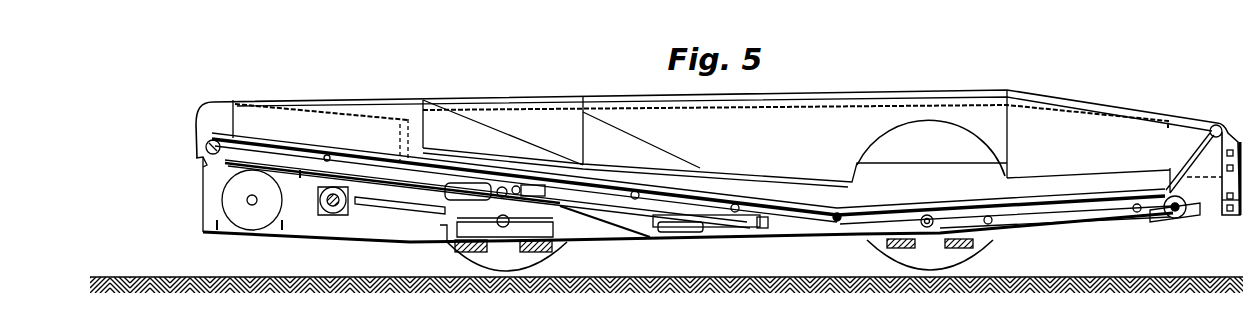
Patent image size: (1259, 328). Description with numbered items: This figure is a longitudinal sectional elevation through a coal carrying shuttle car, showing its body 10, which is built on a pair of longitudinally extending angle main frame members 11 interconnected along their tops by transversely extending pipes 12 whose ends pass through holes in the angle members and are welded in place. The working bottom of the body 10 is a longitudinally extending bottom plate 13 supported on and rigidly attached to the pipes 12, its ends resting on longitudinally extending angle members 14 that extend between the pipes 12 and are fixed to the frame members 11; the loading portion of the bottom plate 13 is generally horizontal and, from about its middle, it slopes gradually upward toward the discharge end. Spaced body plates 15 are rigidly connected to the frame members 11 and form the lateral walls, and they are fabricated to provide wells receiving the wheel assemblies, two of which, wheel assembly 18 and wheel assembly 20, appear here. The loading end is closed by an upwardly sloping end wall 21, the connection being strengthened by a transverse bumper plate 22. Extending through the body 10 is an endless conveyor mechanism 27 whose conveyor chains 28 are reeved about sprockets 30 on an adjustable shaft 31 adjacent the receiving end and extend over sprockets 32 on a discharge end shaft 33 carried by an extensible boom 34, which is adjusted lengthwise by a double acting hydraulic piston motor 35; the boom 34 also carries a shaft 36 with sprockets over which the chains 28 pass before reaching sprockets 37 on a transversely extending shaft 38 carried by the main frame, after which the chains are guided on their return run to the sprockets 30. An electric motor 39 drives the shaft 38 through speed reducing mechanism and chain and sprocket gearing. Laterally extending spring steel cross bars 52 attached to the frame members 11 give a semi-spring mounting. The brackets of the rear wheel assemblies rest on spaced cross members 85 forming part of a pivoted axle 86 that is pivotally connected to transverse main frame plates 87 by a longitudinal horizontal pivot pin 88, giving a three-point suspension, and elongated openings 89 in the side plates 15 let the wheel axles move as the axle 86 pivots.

The body 10 is at (870, 85).
The angle main frame members 11 is at (1042, 220).
The transversely extending pipes 12 is at (328, 155).
The bottom plate 13 is at (908, 202).
The longitudinally extending angle members 14 is at (373, 165).
The body plates 15 is at (802, 127).
The wheel assembly 18 is at (990, 253).
The wheel assembly 20 is at (567, 250).
The end wall 21 is at (1185, 160).
The bumper plate 22 is at (1236, 215).
The endless conveyor mechanism 27 is at (309, 168).
The endless conveyor chains 28 is at (580, 224).
The sprockets 30 is at (1162, 221).
The adjustable shaft 31 is at (1175, 218).
The sprockets 32 is at (210, 140).
The discharge end shaft 33 is at (201, 158).
The extensible frame or boom 34 is at (390, 176).
The double acting hydraulic piston motor 35 is at (638, 212).
The shaft 36 is at (512, 170).
The sprockets 37 is at (328, 208).
The transversely extending shaft 38 is at (322, 213).
The electric motor 39 is at (230, 198).
The main frame cross members or bars 52 is at (960, 241).
The cross members 85 is at (477, 252).
The pivoted axle 86 is at (510, 248).
The main frame plates 87 is at (470, 250).
The horizontal pivot pin 88 is at (495, 238).
The elongated openings 89 is at (447, 226).